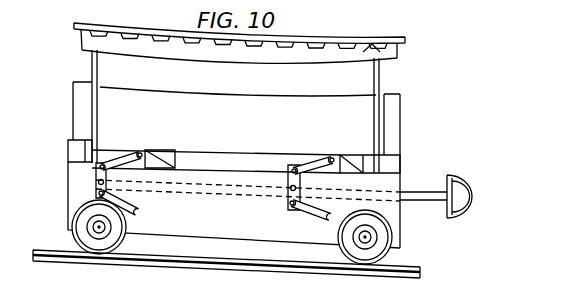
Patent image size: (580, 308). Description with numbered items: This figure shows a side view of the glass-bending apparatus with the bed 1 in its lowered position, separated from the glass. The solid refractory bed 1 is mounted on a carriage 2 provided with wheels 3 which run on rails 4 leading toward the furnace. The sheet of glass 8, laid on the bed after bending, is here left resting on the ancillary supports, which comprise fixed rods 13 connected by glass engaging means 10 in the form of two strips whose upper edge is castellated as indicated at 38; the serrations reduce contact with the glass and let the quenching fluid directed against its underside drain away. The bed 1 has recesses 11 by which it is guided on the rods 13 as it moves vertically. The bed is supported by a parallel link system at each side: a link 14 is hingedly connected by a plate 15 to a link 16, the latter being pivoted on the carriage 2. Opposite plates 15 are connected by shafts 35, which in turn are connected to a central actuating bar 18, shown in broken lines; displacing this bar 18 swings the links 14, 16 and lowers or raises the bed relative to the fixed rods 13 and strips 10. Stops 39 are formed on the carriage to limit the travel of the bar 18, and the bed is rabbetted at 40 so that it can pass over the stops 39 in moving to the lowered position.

The bed 1 is at (138, 90).
The carriage 2 is at (132, 228).
The wheels 3 is at (375, 256).
The rails 4 is at (207, 263).
The sheet of glass 8 is at (320, 38).
The glass engaging means 10 is at (397, 58).
The recesses 11 is at (402, 162).
The rods 13 is at (100, 105).
The link 14 is at (322, 168).
The plate 15 is at (287, 172).
The link 16 is at (309, 213).
The actuating bar 18 is at (190, 192).
The shafts 35 is at (288, 193).
The castellated edge 38 is at (363, 52).
The stops 39 is at (163, 149).
The rabbet 40 is at (360, 158).